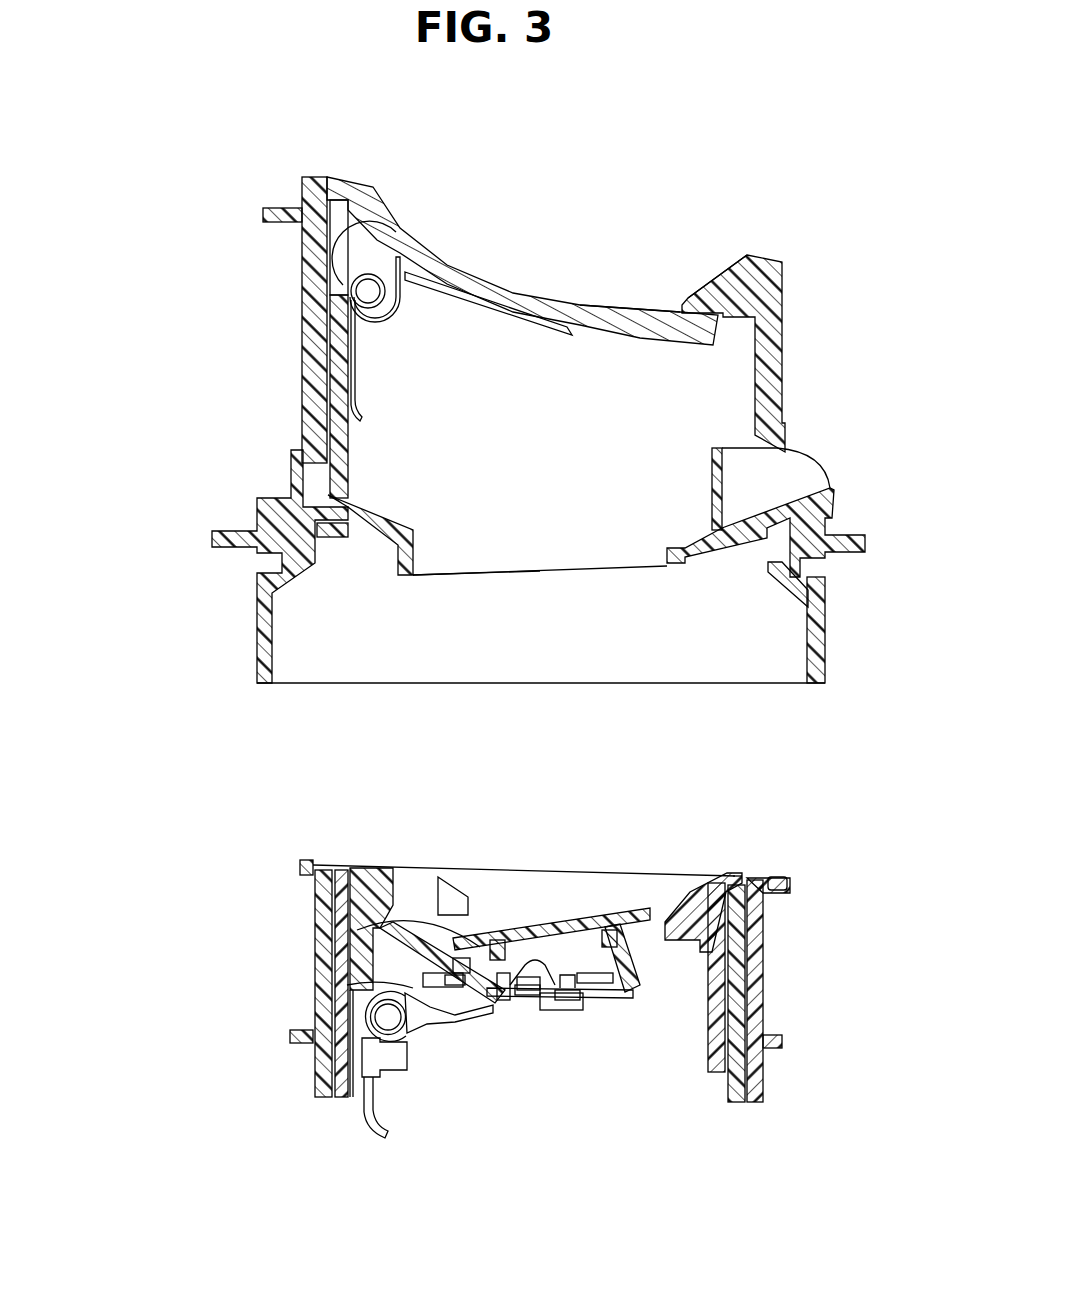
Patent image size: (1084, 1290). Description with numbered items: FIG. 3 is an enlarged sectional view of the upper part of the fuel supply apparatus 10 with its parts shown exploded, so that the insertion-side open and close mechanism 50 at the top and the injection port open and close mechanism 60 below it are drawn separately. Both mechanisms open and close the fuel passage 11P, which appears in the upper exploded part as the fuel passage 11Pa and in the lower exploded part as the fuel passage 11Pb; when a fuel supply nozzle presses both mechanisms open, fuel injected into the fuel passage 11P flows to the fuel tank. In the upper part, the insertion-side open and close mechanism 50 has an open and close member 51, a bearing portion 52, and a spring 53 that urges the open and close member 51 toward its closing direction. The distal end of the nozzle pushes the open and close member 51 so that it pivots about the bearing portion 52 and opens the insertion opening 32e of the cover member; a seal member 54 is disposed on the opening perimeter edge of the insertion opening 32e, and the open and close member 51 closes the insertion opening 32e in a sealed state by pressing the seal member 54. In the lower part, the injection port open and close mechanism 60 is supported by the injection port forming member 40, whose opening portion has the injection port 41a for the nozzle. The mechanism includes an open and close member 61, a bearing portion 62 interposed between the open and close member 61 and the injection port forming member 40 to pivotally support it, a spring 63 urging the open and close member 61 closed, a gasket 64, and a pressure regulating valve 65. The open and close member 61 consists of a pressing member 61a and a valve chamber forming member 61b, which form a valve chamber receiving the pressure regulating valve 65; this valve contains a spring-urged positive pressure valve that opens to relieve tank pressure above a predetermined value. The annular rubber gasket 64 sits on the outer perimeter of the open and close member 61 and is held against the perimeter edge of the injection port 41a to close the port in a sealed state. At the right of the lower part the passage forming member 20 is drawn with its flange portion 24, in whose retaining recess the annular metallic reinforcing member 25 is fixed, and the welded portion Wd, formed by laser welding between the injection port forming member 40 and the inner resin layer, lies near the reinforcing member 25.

The fuel supply apparatus 10 is at (230, 186).
The fuel passage 11Pa is at (607, 494).
The fuel passage 11Pb is at (613, 1131).
The fuel passage 11P is at (524, 800).
The insertion-side open and close mechanism 50 is at (125, 208).
The open and close member 51 is at (370, 264).
The bearing portion 52 is at (360, 286).
The spring 53 is at (357, 320).
The insertion opening 32e is at (633, 310).
The seal member 54 is at (688, 298).
The injection port open and close mechanism 60 is at (193, 905).
The open and close member 61 is at (430, 925).
The pressing member 61a is at (520, 1007).
The valve chamber forming member 61b is at (457, 1000).
The bearing portion 62 is at (432, 985).
The spring 63 is at (375, 1022).
The gasket 64 is at (670, 955).
The pressure regulating valve 65 is at (567, 1007).
The injection port forming member 40 is at (725, 1012).
The injection port 41a is at (660, 940).
The passage forming member 20 is at (763, 1090).
The flange portion 24 is at (777, 892).
The reinforcing member 25 is at (775, 880).
The welded portion Wd is at (736, 868).